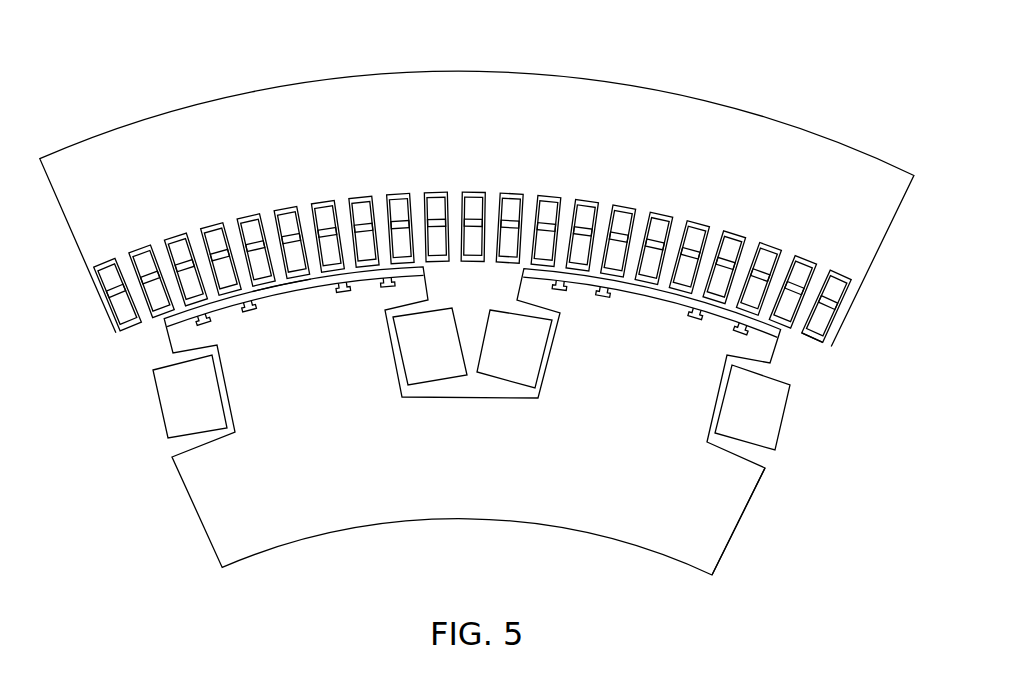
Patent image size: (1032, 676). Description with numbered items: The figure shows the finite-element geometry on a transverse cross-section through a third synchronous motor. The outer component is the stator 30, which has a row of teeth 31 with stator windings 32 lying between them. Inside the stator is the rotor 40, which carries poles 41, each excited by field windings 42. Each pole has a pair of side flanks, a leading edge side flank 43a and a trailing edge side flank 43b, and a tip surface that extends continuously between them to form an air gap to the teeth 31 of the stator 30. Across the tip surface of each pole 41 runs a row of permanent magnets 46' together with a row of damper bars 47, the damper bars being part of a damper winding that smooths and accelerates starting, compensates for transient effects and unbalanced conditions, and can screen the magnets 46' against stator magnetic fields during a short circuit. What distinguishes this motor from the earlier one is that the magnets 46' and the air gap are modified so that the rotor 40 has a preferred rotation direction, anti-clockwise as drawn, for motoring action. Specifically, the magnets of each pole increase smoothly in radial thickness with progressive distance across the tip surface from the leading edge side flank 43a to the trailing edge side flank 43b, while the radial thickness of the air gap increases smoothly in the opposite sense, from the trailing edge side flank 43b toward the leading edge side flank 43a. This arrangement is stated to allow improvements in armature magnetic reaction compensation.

The stator 30 is at (745, 92).
The teeth 31 is at (818, 290).
The stator windings 32 is at (820, 324).
The rotor 40 is at (755, 548).
The poles 41 is at (656, 387).
The field windings 42 is at (766, 422).
The leading edge side flank 43a is at (165, 342).
The trailing edge side flank 43b is at (430, 290).
The permanent magnets 46' is at (280, 336).
The damper bars 47 is at (333, 290).